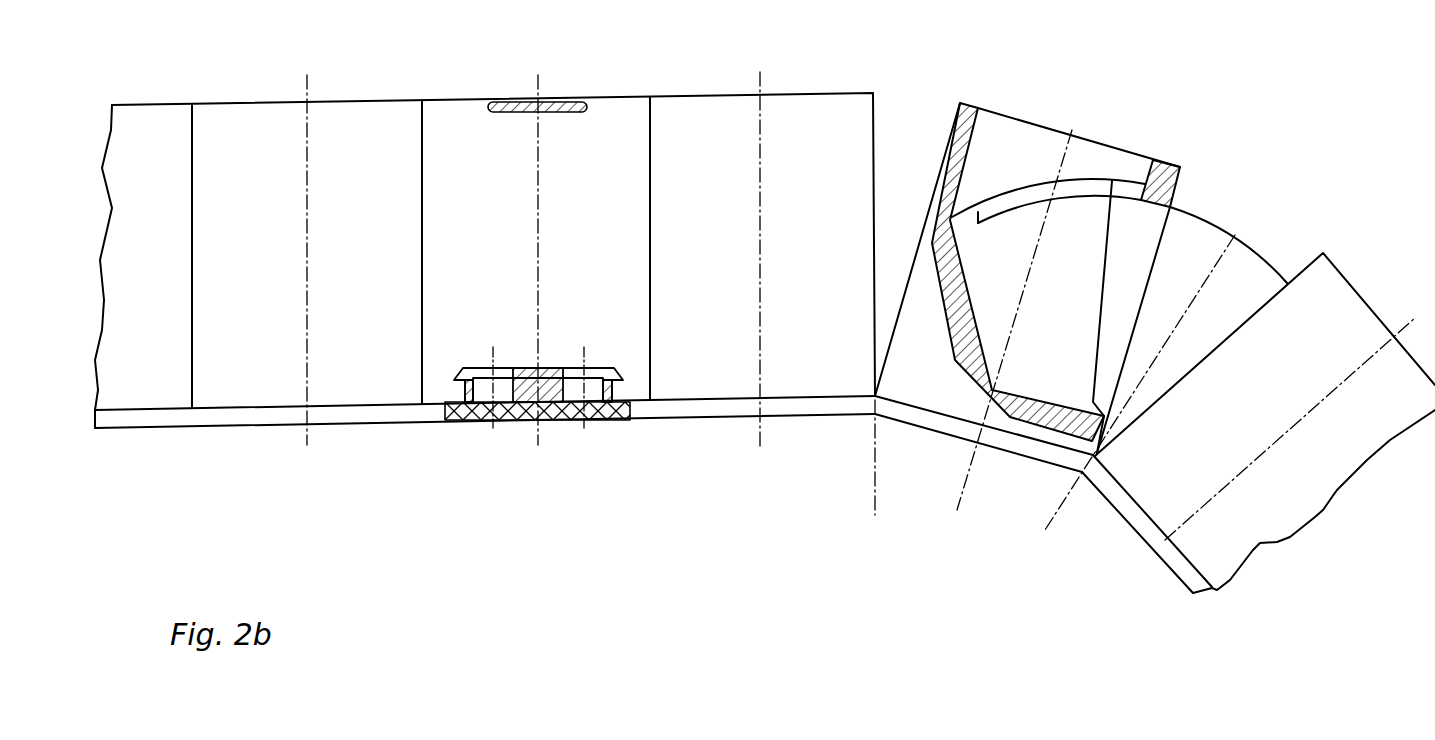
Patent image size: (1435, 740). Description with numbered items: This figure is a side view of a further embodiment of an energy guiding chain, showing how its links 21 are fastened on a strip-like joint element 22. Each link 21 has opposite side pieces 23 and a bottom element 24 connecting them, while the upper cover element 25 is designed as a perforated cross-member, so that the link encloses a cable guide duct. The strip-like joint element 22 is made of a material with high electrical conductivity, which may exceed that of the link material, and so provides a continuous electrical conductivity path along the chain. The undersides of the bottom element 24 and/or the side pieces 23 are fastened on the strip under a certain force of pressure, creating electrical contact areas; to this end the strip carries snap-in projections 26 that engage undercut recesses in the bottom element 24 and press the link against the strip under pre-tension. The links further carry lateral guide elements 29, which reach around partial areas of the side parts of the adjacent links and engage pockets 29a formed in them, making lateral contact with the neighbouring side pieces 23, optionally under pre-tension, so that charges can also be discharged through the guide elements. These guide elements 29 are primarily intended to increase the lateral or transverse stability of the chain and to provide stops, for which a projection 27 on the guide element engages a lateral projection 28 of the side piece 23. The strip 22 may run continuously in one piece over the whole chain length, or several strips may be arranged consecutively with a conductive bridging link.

The link 21 is at (718, 383).
The strip-like joint element 22 is at (365, 412).
The side piece 23 is at (616, 132).
The bottom element 24 is at (523, 365).
The upper cover element 25 is at (511, 100).
The snap-in projection 26 is at (483, 395).
The projection 27 is at (1132, 190).
The lateral projection 28 is at (1163, 175).
The lateral guide element 29 is at (1185, 277).
The pocket 29a is at (1033, 250).